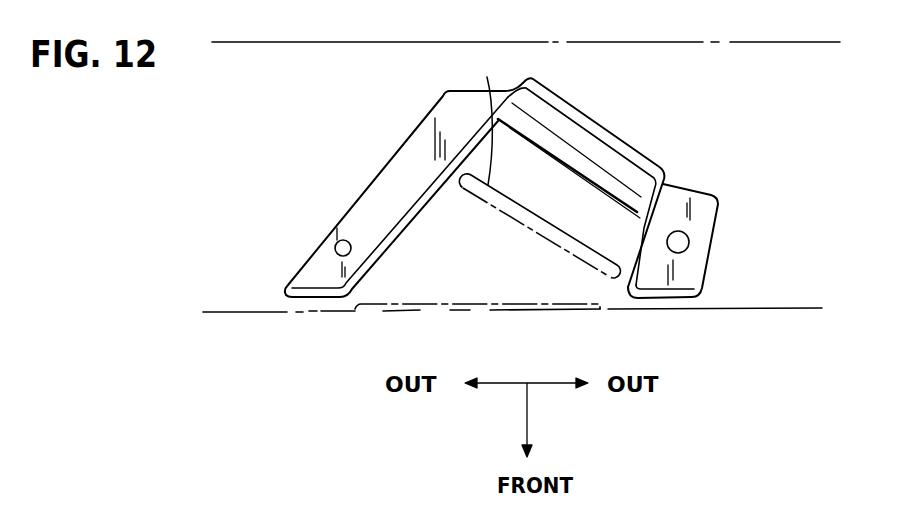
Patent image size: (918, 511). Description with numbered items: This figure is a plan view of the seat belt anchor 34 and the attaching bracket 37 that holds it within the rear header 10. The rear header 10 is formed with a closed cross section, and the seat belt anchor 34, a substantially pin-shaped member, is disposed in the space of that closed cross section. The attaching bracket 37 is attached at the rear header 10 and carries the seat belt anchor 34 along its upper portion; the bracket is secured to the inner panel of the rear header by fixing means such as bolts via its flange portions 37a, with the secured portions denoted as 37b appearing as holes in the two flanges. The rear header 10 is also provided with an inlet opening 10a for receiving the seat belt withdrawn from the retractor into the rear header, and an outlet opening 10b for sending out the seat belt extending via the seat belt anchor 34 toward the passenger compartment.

The rear header 10 is at (657, 41).
The inlet opening 10a is at (520, 309).
The outlet opening 10b is at (487, 77).
The seat belt anchor 34 is at (567, 145).
The attaching bracket 37 is at (534, 184).
The flange portion 37a is at (413, 160).
The secured portion 37b is at (335, 247).